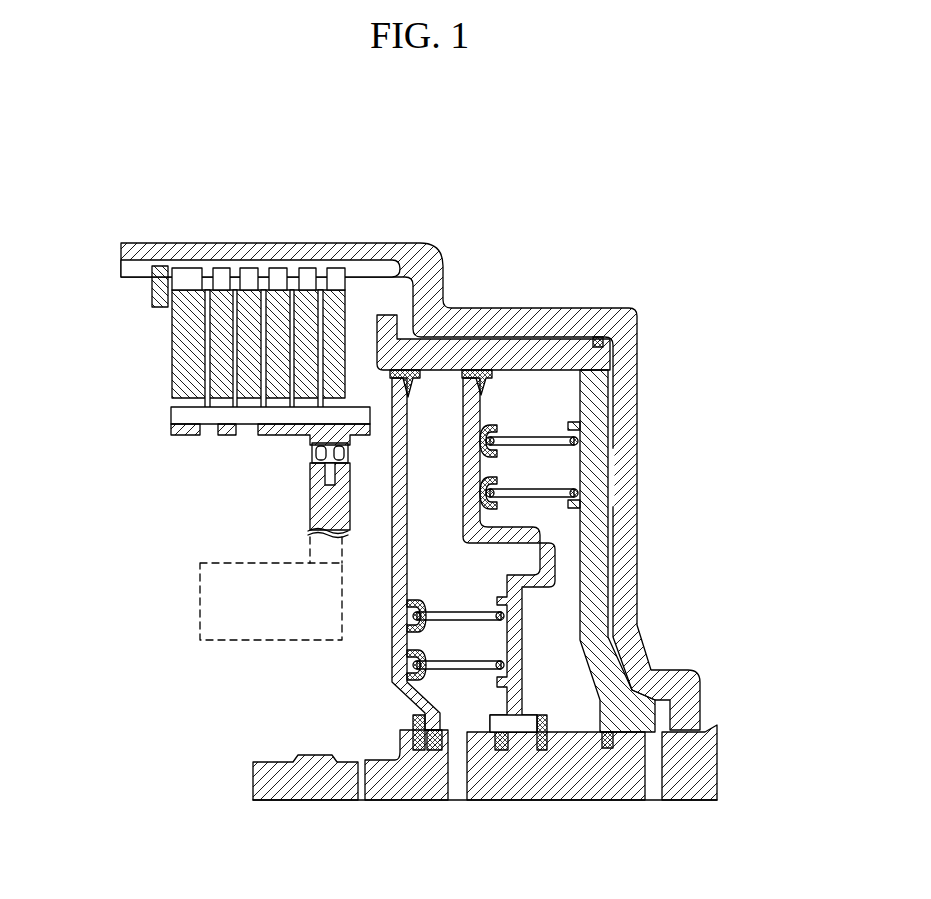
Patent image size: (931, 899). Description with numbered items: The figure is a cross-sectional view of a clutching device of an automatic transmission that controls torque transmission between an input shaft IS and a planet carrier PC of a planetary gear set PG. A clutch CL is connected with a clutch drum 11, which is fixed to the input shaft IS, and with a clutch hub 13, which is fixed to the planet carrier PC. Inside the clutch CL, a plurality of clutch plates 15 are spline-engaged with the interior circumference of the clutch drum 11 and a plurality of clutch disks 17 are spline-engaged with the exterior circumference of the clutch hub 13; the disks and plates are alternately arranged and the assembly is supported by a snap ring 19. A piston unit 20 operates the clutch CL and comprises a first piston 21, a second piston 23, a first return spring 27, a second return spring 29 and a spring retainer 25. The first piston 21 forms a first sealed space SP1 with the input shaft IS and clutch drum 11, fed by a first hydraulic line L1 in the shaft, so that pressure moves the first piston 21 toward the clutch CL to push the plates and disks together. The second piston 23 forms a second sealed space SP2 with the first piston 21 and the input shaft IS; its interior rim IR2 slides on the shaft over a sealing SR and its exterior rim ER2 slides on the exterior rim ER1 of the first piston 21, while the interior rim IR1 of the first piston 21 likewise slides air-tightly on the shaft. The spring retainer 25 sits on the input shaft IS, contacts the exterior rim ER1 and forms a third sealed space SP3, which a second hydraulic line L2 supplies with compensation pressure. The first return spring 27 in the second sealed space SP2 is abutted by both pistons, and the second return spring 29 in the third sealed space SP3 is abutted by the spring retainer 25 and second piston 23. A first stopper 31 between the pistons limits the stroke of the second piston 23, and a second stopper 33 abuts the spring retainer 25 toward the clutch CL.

The clutch drum 11 is at (632, 383).
The clutch hub 13 is at (190, 435).
The clutch plates 15 is at (252, 298).
The clutch disks 17 is at (322, 297).
The snap ring 19 is at (160, 268).
The piston unit 20 is at (705, 412).
The first piston 21 is at (603, 522).
The second piston 23 is at (467, 470).
The spring retainer 25 is at (397, 573).
The first return spring 27 is at (537, 440).
The second return spring 29 is at (477, 617).
The first stopper 31 is at (545, 750).
The second stopper 33 is at (413, 722).
The clutch CL is at (125, 349).
The planet carrier PC is at (315, 507).
The planetary gear set PG is at (200, 603).
The exterior rim of the first piston ER1 is at (547, 357).
The exterior rim of the second piston ER2 is at (470, 393).
The sealing SR is at (412, 385).
The first sealed space SP1 is at (663, 715).
The second sealed space SP2 is at (553, 668).
The third sealed space SP3 is at (453, 693).
The input shaft IS is at (582, 785).
The interior rim of the first piston IR1 is at (632, 715).
The interior rim of the second piston IR2 is at (520, 723).
The first hydraulic line L1 is at (657, 779).
The second hydraulic line L2 is at (452, 779).